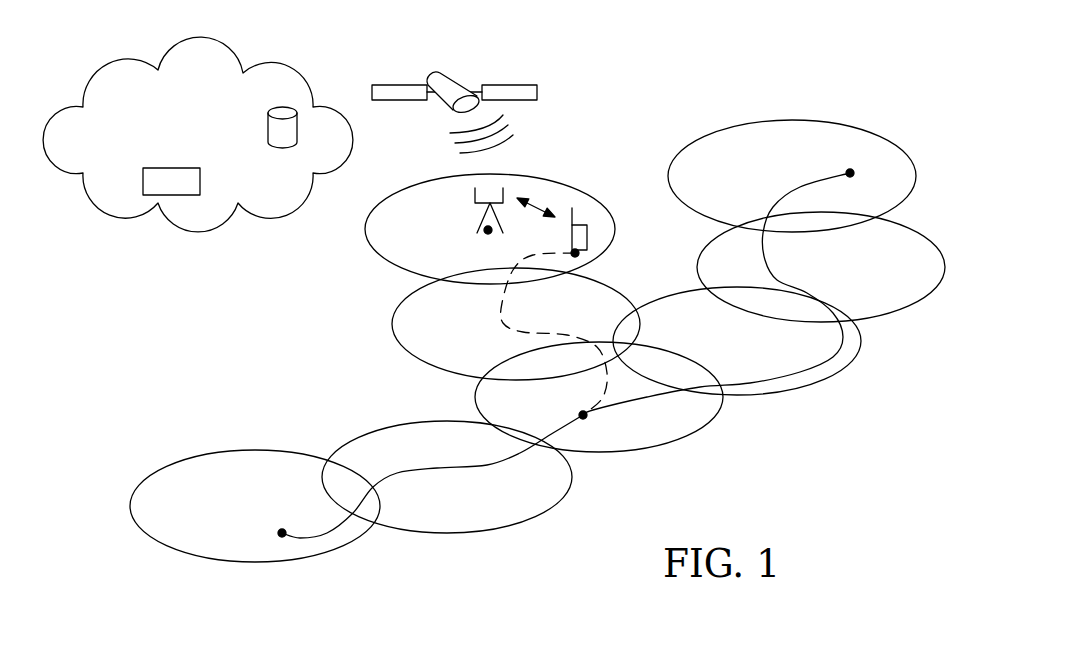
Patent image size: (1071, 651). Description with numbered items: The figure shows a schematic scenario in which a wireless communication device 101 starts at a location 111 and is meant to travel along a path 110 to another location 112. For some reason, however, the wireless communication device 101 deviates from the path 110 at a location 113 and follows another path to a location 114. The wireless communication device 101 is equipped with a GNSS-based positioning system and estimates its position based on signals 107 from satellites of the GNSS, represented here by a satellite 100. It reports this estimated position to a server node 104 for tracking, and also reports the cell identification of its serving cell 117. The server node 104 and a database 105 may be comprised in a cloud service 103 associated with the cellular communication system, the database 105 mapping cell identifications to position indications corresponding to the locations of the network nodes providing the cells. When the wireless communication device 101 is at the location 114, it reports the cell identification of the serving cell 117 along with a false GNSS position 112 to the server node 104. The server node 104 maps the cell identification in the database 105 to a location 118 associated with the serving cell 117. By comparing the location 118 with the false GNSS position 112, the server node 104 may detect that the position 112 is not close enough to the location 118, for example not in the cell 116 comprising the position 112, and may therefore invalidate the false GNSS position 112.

The satellite 100 is at (457, 75).
The wireless communication device 101 is at (587, 227).
The cloud service 103 is at (115, 220).
The server node 104 is at (168, 167).
The database 105 is at (268, 138).
The signals 107 is at (523, 120).
The path 110 is at (370, 492).
The location 111 is at (282, 533).
The location 112 is at (850, 173).
The location 113 is at (583, 415).
The location 114 is at (575, 253).
The cell 116 is at (832, 122).
The serving cell 117 is at (398, 270).
The location 118 is at (488, 230).